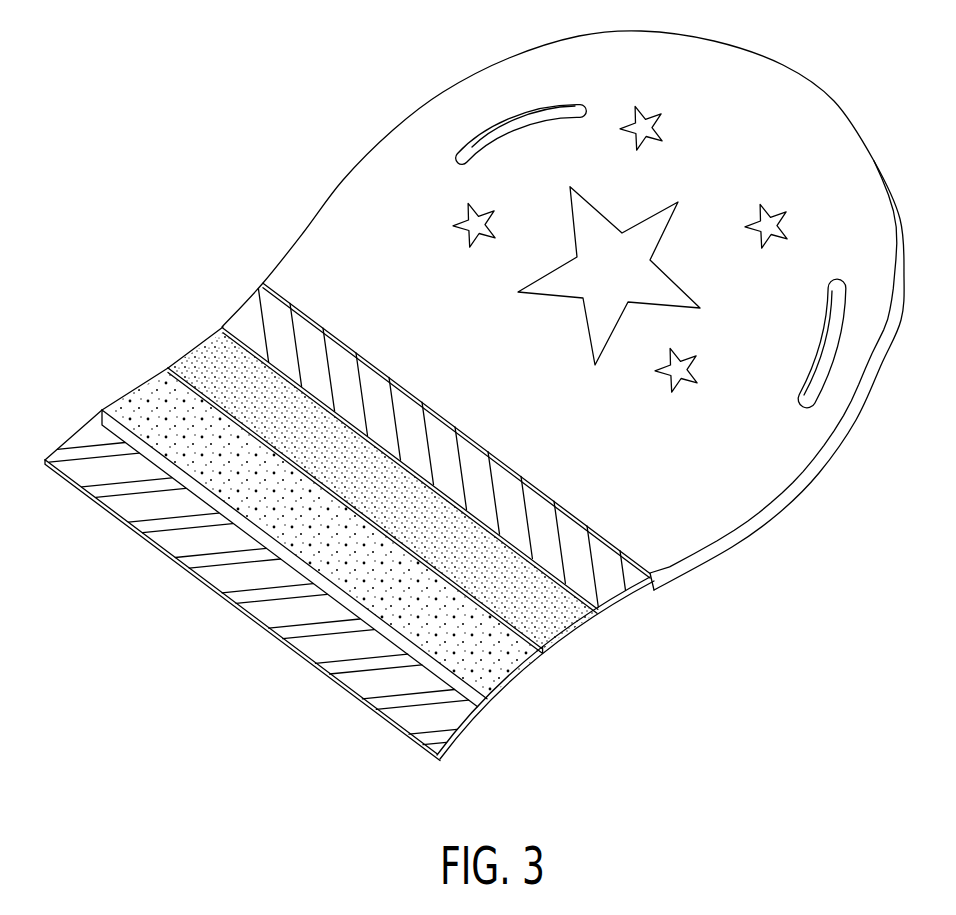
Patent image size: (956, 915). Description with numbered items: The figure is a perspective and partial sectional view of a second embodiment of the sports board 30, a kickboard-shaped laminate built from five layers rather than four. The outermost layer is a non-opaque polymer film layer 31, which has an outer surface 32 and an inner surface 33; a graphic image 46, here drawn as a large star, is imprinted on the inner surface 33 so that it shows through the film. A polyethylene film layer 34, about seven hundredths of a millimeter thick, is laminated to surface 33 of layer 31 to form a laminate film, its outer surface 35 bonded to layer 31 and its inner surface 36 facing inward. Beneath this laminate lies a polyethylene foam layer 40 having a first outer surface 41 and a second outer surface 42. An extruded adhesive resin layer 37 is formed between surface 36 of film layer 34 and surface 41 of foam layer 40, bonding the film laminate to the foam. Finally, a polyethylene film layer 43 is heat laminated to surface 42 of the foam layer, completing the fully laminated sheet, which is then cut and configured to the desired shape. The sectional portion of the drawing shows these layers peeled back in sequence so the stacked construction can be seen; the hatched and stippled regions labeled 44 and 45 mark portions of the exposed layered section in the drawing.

The sports board 30 is at (298, 85).
The second non-opaque polymer film layer 31 is at (651, 588).
The outer surface of second film layer 32 is at (524, 397).
The inner surface of second film layer 33 is at (275, 300).
The first film layer 34 is at (598, 612).
The outer surface of first film layer 35 is at (437, 457).
The inner surface of first film layer 36 is at (225, 346).
The extruded adhesive resin layer 37 is at (535, 660).
The polyethylene foam layer 40 is at (478, 706).
The first outer surface of foam layer 41 is at (388, 581).
The second outer surface of foam layer 42 is at (151, 456).
The polyethylene film layer 43 is at (448, 757).
The base plate 44 is at (240, 573).
The base plate bottom edge 45 is at (80, 490).
The graphic image 46 is at (672, 194).